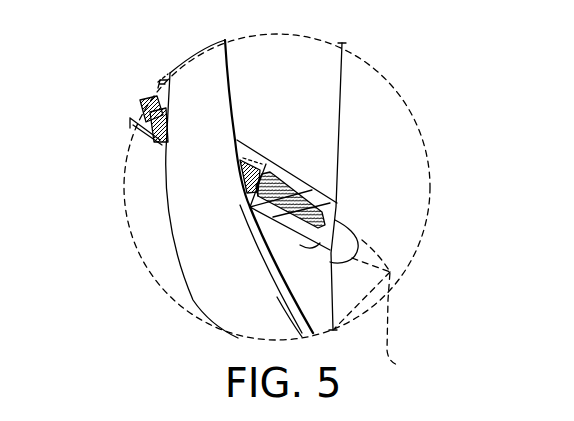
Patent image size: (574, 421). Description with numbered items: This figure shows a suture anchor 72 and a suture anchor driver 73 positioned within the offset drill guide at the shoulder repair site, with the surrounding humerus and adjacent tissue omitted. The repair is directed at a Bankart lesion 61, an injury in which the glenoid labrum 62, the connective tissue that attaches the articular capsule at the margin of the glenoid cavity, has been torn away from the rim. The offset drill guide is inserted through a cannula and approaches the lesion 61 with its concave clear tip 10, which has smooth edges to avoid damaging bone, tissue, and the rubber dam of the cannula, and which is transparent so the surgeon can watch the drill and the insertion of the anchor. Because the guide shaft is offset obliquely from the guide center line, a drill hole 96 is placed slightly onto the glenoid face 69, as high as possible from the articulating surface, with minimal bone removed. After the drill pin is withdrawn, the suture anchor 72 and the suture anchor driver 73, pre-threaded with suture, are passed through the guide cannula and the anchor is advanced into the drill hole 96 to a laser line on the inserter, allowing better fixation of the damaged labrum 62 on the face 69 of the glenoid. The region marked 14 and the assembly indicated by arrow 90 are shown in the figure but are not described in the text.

The concave clear tip 10 is at (318, 244).
The hook 14 is at (337, 218).
The Bankart lesion 61 is at (302, 57).
The glenoid labrum 62 is at (190, 83).
The glenoid face 69 is at (400, 150).
The suture anchor 72 is at (316, 185).
The suture anchor driver 73 is at (262, 158).
The clip 90 is at (124, 101).
The drill hole 96 is at (382, 310).